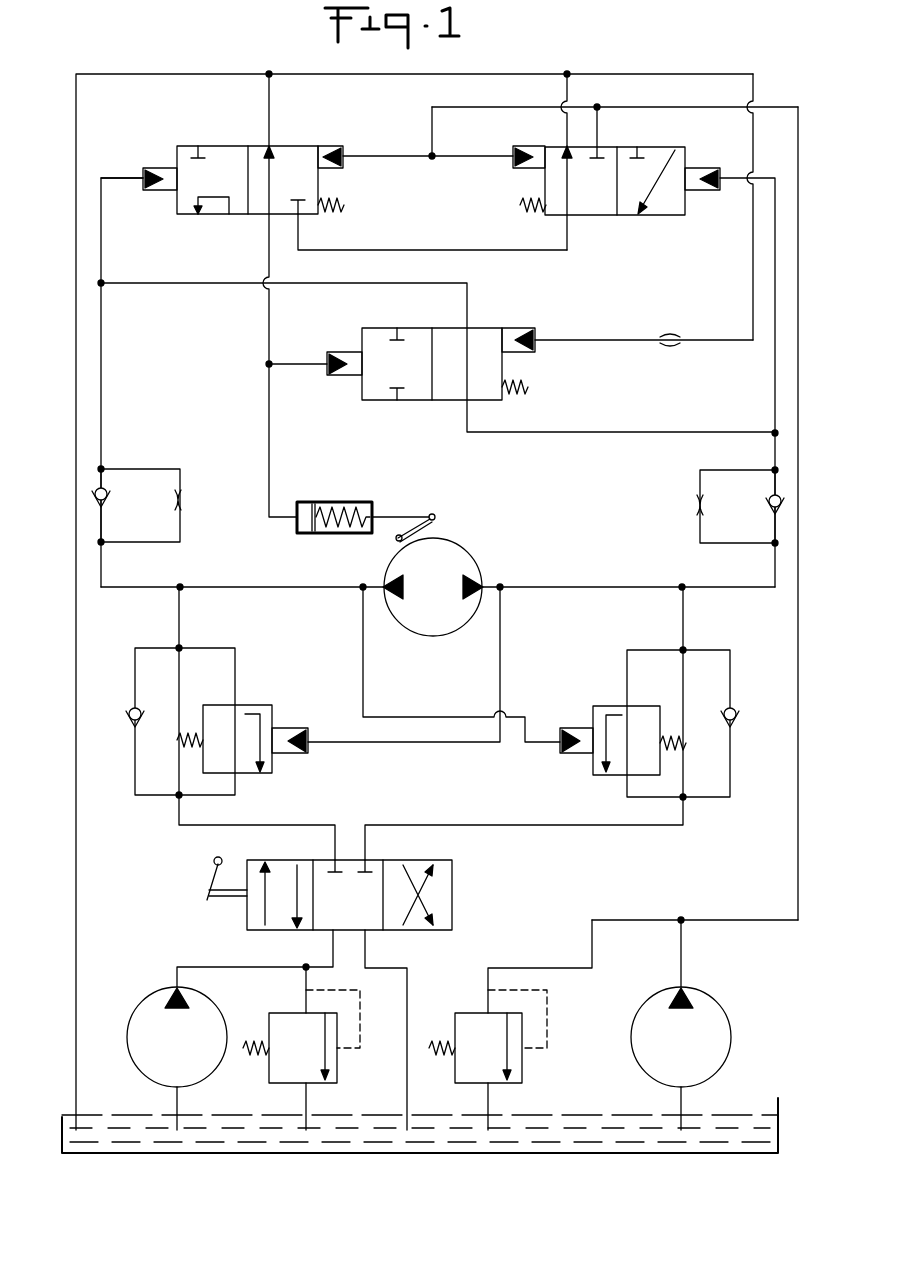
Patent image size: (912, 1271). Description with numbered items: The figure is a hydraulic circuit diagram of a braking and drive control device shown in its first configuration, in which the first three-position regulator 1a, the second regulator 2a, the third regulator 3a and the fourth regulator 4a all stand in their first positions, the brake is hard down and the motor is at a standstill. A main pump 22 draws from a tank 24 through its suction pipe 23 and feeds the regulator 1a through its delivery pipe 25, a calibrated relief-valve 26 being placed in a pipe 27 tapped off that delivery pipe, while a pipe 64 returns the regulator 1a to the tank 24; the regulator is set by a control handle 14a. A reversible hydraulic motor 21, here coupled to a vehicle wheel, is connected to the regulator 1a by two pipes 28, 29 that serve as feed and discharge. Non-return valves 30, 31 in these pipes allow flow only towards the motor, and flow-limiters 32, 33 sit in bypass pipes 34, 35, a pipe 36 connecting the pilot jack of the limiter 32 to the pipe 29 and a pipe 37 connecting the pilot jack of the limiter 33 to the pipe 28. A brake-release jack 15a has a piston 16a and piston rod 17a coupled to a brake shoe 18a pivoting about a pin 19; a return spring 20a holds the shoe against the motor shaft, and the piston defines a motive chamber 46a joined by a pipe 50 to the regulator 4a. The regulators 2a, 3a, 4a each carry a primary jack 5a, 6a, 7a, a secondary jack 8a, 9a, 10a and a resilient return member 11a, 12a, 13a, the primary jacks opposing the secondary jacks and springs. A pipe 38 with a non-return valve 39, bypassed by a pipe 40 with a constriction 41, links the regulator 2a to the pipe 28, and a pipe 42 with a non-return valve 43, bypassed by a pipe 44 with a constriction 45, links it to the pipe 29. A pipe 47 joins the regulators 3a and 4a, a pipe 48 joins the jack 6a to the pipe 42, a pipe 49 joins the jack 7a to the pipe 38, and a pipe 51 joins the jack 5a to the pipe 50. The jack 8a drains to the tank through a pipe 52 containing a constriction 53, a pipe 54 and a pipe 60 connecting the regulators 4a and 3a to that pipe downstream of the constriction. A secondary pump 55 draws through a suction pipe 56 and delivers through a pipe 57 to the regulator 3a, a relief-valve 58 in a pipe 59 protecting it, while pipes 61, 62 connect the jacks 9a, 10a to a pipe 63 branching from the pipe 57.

The first three-position regulator 1a is at (458, 898).
The second regulator 2a is at (390, 404).
The third regulator 3a is at (586, 216).
The fourth regulator 4a is at (250, 218).
The primary jack 5a is at (346, 350).
The primary jack 6a is at (708, 190).
The primary jack 7a is at (162, 191).
The secondary jack 8a is at (514, 328).
The secondary jack 9a is at (532, 144).
The secondary jack 10a is at (330, 146).
The resilient return member 11a is at (520, 388).
The resilient return member 12a is at (526, 208).
The resilient return member 13a is at (342, 210).
The control handle 14a is at (212, 862).
The brake-release jack 15a is at (296, 540).
The piston 16a is at (326, 508).
The piston rod 17a is at (394, 516).
The brake shoe 18a is at (434, 520).
The pin 19 is at (396, 538).
The return spring 20a is at (344, 534).
The hydraulic motor 21 is at (470, 562).
The main pump 22 is at (138, 1006).
The suction pipe 23 is at (176, 1104).
The tank 24 is at (780, 1096).
The delivery pipe 25 is at (288, 966).
The calibrated relief-valve 26 is at (338, 1068).
The pipe 27 is at (304, 980).
The pipe 28 is at (202, 612).
The pipe 29 is at (668, 588).
The non-return valve 30 is at (128, 710).
The non-return valve 31 is at (734, 712).
The flow-limiter 32 is at (274, 762).
The flow-limiter 33 is at (590, 772).
The pipe 34 is at (236, 790).
The pipe 35 is at (626, 792).
The pipe 36 is at (502, 628).
The pipe 37 is at (362, 630).
The pipe 38 is at (136, 300).
The non-return valve 39 is at (108, 492).
The pipe 40 is at (180, 492).
The constriction 41 is at (186, 500).
The pipe 42 is at (770, 472).
The non-return valve 43 is at (768, 496).
The pipe 44 is at (700, 480).
The constriction 45 is at (692, 512).
The motive chamber 46a is at (306, 508).
The pipe 47 is at (436, 238).
The pipe 48 is at (774, 380).
The pipe 49 is at (101, 178).
The pipe 50 is at (268, 366).
The pipe 51 is at (298, 362).
The pipe 52 is at (278, 74).
The constriction 53 is at (668, 350).
The pipe 54 is at (269, 116).
The secondary pump 55 is at (726, 1022).
The suction pipe 56 is at (684, 1096).
The delivery pipe 57 is at (598, 120).
The relief-valve 58 is at (522, 1066).
The pipe 59 is at (592, 948).
The pipe 60 is at (558, 102).
The pipe 61 is at (448, 150).
The pipe 62 is at (412, 148).
The pipe 63 is at (466, 106).
The pipe 64 is at (408, 982).